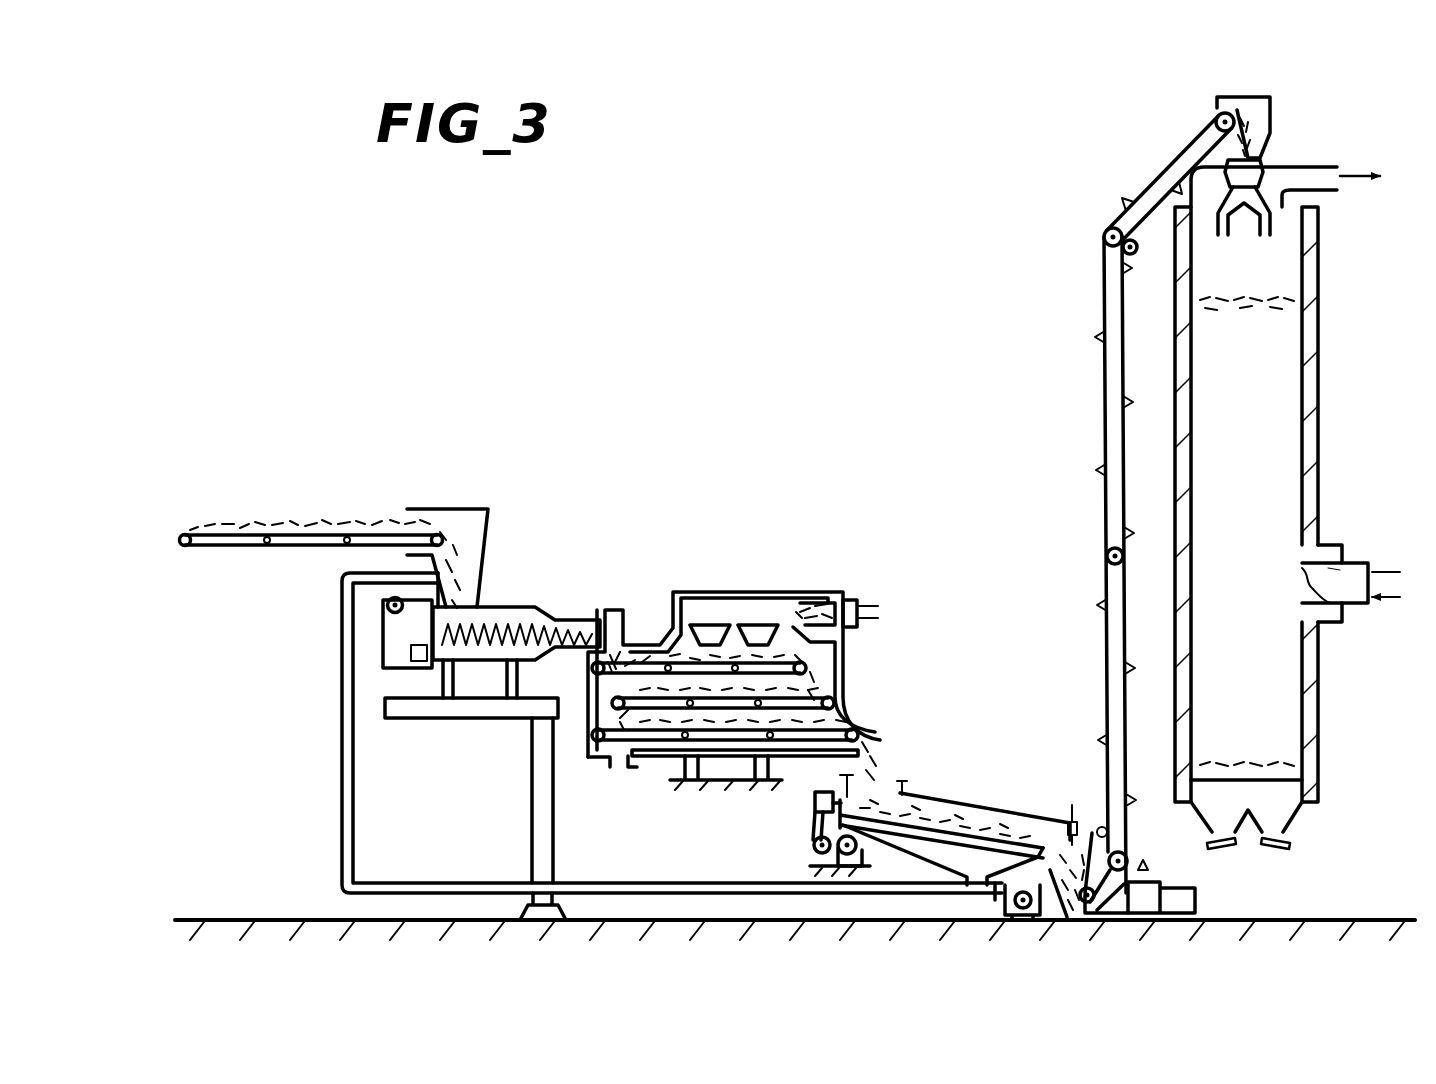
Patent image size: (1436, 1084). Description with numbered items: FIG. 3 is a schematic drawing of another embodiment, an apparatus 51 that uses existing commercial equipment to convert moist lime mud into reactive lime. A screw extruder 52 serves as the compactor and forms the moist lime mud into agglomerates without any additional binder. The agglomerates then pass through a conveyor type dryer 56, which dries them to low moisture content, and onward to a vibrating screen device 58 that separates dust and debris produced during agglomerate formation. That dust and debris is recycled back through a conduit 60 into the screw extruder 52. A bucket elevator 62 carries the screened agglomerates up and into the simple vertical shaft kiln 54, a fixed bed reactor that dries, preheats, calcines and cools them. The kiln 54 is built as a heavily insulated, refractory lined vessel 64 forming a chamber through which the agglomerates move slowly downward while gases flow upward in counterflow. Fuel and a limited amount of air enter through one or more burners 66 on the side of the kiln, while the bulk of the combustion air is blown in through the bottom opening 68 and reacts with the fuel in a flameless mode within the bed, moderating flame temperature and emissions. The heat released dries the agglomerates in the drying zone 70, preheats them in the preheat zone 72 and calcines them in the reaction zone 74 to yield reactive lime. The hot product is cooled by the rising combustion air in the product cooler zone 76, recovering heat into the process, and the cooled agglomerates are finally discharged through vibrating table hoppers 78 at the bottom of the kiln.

The apparatus 51 is at (823, 203).
The screw extruder 52 is at (491, 505).
The vertical shaft kiln 54 is at (1170, 312).
The conveyor type dryer 56 is at (774, 588).
The vibrating screen device 58 is at (957, 803).
The conduit 60 is at (342, 780).
The bucket elevator 62 is at (1106, 578).
The refractory lined vessel 64 is at (1183, 452).
The burner 66 is at (1360, 606).
The bottom opening 68 is at (1302, 838).
The drying zone 70 is at (1268, 357).
The preheat zone 72 is at (1270, 458).
The reaction zone 74 is at (1270, 577).
The product cooler zone 76 is at (1268, 703).
The vibrating table hoppers 78 is at (1278, 848).